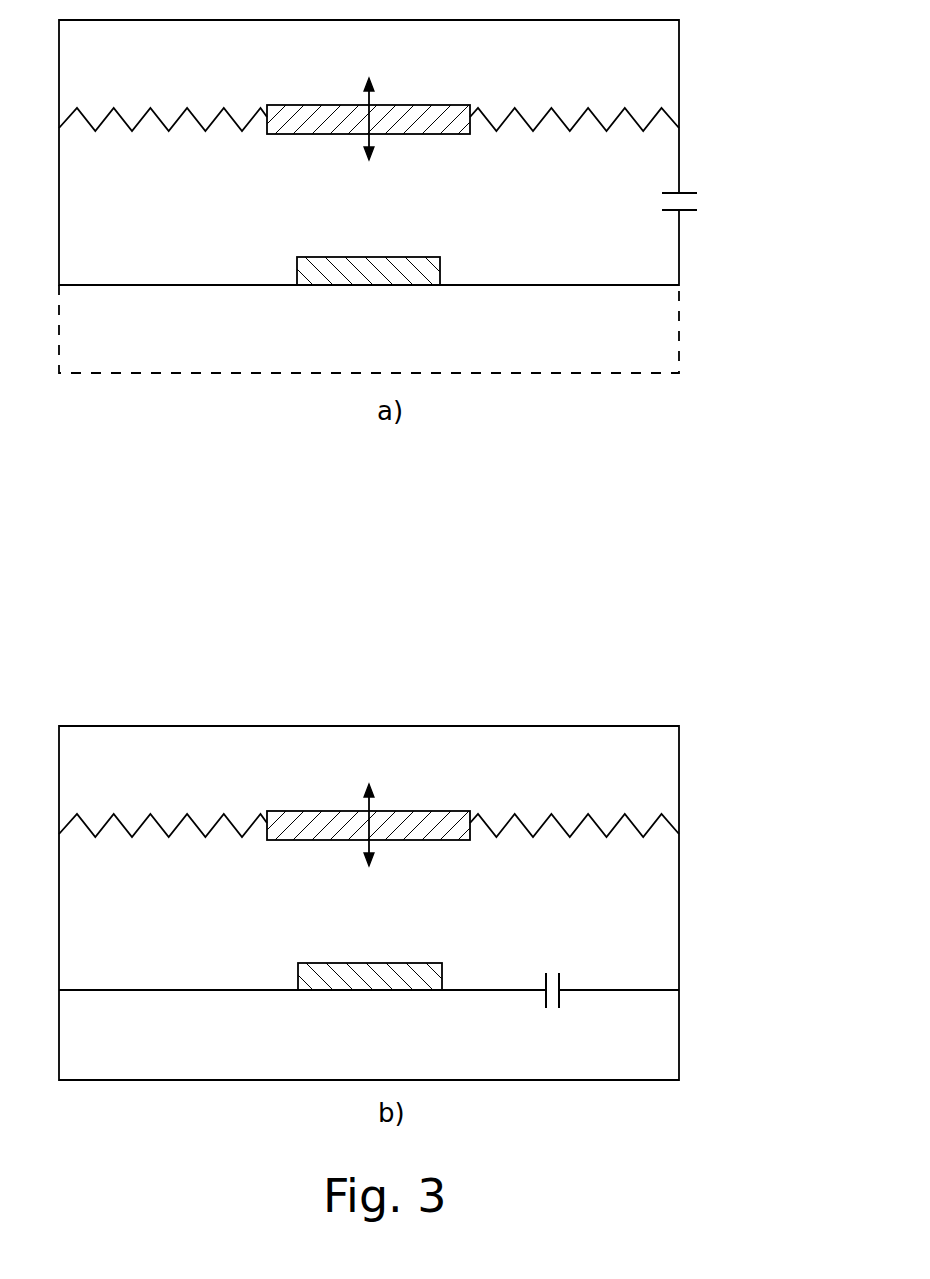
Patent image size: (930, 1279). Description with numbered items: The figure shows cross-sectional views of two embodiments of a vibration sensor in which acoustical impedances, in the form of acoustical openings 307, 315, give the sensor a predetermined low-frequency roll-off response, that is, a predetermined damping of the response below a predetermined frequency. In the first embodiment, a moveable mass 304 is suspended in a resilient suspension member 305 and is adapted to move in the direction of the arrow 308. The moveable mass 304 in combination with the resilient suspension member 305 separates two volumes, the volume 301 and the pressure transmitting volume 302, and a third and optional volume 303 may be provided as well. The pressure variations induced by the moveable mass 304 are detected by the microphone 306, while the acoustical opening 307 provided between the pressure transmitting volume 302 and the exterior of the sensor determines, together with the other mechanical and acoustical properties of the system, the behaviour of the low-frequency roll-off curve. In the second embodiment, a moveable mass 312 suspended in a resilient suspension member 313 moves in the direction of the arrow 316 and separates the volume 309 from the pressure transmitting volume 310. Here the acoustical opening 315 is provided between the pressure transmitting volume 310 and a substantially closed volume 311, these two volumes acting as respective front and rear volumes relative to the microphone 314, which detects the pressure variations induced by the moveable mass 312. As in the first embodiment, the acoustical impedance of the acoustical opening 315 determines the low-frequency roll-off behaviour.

The volume 301 is at (667, 53).
The pressure transmitting volume 302 is at (667, 157).
The third and optional volume 303 is at (667, 328).
The moveable mass 304 is at (387, 115).
The resilient suspension member 305 is at (557, 120).
The microphone 306 is at (368, 263).
The acoustical opening 307 is at (693, 200).
The arrow 308 is at (363, 138).
The volume 309 is at (667, 768).
The pressure transmitting volume 310 is at (667, 872).
The substantially closed volume 311 is at (667, 1043).
The moveable mass 312 is at (387, 821).
The resilient suspension member 313 is at (557, 826).
The microphone 314 is at (370, 968).
The acoustical opening 315 is at (552, 972).
The arrow 316 is at (363, 845).